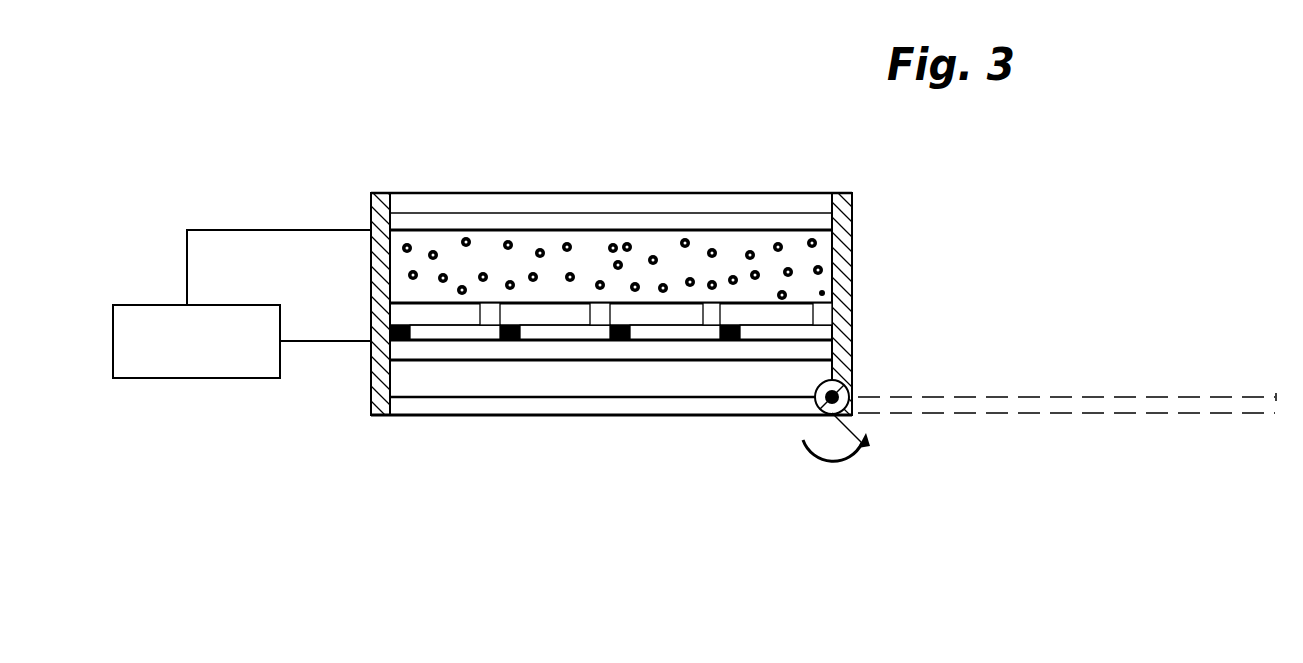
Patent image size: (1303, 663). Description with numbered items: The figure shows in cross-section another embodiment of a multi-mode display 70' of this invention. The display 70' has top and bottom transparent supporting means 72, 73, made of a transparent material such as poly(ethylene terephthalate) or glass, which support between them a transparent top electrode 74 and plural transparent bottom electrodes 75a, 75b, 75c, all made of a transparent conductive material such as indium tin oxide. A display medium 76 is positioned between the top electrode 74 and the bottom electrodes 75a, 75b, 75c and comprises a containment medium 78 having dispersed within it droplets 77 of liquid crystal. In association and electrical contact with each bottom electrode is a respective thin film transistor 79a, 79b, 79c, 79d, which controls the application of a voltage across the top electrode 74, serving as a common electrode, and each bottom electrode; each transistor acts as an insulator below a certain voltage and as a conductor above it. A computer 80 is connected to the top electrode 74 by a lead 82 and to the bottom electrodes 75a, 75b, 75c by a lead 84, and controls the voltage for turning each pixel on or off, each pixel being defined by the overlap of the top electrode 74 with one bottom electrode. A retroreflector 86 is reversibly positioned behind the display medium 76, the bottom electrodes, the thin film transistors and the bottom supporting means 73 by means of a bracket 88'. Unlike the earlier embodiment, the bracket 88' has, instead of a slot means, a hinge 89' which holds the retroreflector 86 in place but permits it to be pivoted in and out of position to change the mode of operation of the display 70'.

The display 70' is at (474, 232).
The top transparent supporting means 72 is at (427, 205).
The bottom transparent supporting means 73 is at (818, 327).
The top electrode 74 is at (822, 220).
The bottom electrode 75a is at (437, 313).
The bottom electrode 75b is at (562, 313).
The bottom electrode 75c is at (657, 313).
The display medium 76 is at (835, 257).
The droplets 77 is at (410, 274).
The containment medium 78 is at (808, 286).
The thin film transistor 79a is at (370, 367).
The thin film transistor 79b is at (510, 342).
The thin film transistor 79c is at (622, 320).
The thin film transistor 79d is at (740, 342).
The computer 80 is at (182, 378).
The lead 82 is at (213, 230).
The lead 84 is at (305, 347).
The retroreflector 86 is at (792, 418).
The bracket 88' is at (696, 356).
The hinge 89' is at (1045, 421).